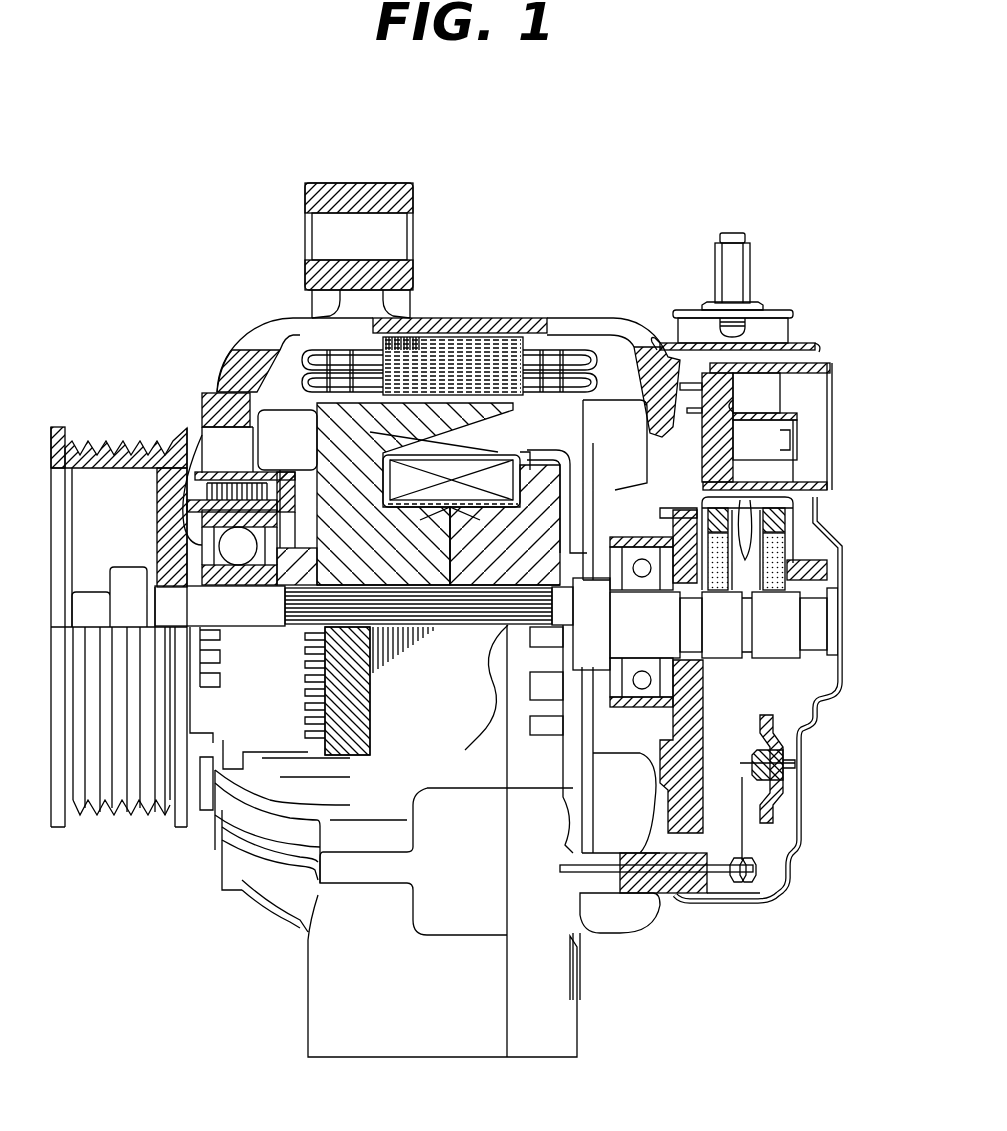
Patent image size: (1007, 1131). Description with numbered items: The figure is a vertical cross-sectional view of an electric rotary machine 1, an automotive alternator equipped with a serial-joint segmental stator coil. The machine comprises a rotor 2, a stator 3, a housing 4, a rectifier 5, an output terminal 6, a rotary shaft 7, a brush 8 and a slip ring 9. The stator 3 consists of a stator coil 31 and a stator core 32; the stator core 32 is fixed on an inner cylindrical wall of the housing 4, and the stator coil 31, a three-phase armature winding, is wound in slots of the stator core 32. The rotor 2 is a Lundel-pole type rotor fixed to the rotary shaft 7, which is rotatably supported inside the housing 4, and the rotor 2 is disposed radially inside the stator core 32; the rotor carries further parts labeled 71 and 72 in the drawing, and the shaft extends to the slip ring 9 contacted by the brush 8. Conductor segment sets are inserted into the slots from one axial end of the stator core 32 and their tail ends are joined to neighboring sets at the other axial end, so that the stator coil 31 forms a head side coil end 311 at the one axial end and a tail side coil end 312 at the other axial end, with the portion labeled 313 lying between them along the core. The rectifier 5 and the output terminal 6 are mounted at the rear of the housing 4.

The electric rotary machine 1 is at (690, 191).
The rotor 2 is at (281, 405).
The stator 3 is at (430, 285).
The stator coil 31 is at (430, 285).
The head side coil end 311 is at (317, 343).
The tail side coil end 312 is at (600, 354).
The slot-accommodated portion of winding 313 is at (454, 362).
The stator core 32 is at (438, 337).
The housing 4 is at (452, 465).
The rectifier 5 is at (763, 767).
The output terminal 6 is at (740, 262).
The rotary shaft 7 is at (182, 613).
The pole core 71 is at (340, 457).
The claw pole 72 is at (440, 455).
The brush 8 is at (723, 550).
The slip ring 9 is at (777, 608).